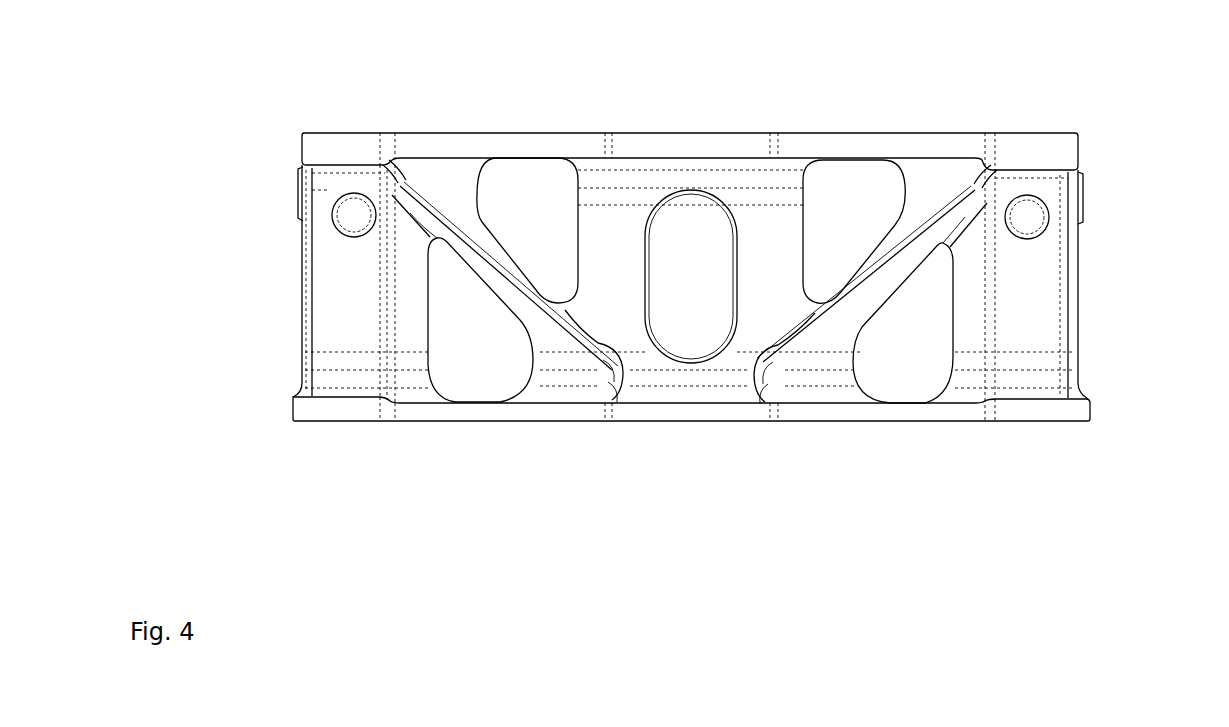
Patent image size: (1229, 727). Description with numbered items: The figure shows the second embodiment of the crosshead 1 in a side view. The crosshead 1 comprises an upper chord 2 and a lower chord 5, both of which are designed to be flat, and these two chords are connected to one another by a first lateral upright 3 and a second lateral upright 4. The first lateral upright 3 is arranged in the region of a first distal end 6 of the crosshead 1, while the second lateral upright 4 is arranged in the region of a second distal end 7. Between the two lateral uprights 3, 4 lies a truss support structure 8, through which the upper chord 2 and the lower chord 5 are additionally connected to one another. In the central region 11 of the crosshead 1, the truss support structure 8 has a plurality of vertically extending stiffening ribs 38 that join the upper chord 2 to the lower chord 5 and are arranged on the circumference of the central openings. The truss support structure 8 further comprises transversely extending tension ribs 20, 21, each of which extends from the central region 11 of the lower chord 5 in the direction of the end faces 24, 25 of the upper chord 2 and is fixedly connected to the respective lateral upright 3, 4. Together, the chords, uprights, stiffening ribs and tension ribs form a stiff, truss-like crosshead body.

The crosshead 1 is at (280, 447).
The upper chord 2 is at (880, 130).
The first lateral upright 3 is at (322, 338).
The second lateral upright 4 is at (1052, 340).
The lower chord 5 is at (545, 422).
The first distal end 6 is at (305, 296).
The second distal end 7 is at (1078, 280).
The truss support structure 8 is at (808, 392).
The central region 11 is at (572, 80).
The tension rib 20 is at (497, 273).
The tension rib 21 is at (885, 271).
The end face 24 is at (302, 145).
The end face 25 is at (1075, 155).
The stiffening ribs 38 is at (755, 268).